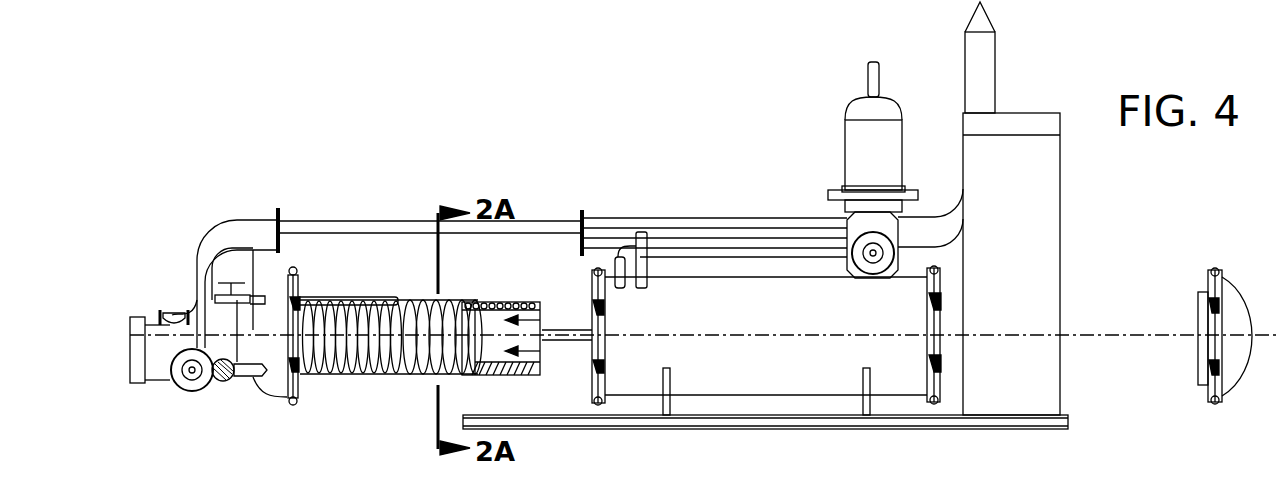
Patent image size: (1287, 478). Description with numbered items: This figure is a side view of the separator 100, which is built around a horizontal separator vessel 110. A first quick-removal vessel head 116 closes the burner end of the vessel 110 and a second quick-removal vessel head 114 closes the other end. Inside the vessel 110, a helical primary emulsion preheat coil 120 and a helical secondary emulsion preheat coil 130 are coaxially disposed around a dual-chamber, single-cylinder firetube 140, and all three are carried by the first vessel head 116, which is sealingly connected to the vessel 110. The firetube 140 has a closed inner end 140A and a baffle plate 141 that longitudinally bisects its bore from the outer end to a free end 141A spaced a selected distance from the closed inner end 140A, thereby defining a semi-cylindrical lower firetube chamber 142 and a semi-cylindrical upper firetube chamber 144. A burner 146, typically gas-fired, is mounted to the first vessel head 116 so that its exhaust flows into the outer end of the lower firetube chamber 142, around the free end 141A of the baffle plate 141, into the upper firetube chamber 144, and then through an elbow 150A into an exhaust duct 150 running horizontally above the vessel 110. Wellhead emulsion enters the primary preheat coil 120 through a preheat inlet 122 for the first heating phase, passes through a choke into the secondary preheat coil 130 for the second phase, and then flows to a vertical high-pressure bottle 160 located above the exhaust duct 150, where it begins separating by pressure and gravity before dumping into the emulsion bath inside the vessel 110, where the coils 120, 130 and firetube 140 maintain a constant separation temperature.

The separator 100 is at (656, 100).
The horizontal separator vessel 110 is at (742, 360).
The second quick-removal vessel head 114 is at (1202, 292).
The first quick-removal vessel head 116 is at (287, 267).
The helical primary emulsion preheat coil 120 is at (330, 376).
The preheat inlet 122 is at (223, 383).
The helical secondary emulsion preheat coil 130 is at (453, 300).
The dual-chamber single-cylinder firetube 140 is at (398, 360).
The closed inner end 140A is at (606, 324).
The baffle plate 141 is at (500, 374).
The free end 141A is at (606, 348).
The lower firetube chamber 142 is at (542, 352).
The upper firetube chamber 144 is at (542, 318).
The burner 146 is at (160, 372).
The exhaust duct 150 is at (715, 220).
The elbow 150A is at (252, 222).
The vertical high-pressure bottle 160 is at (857, 158).